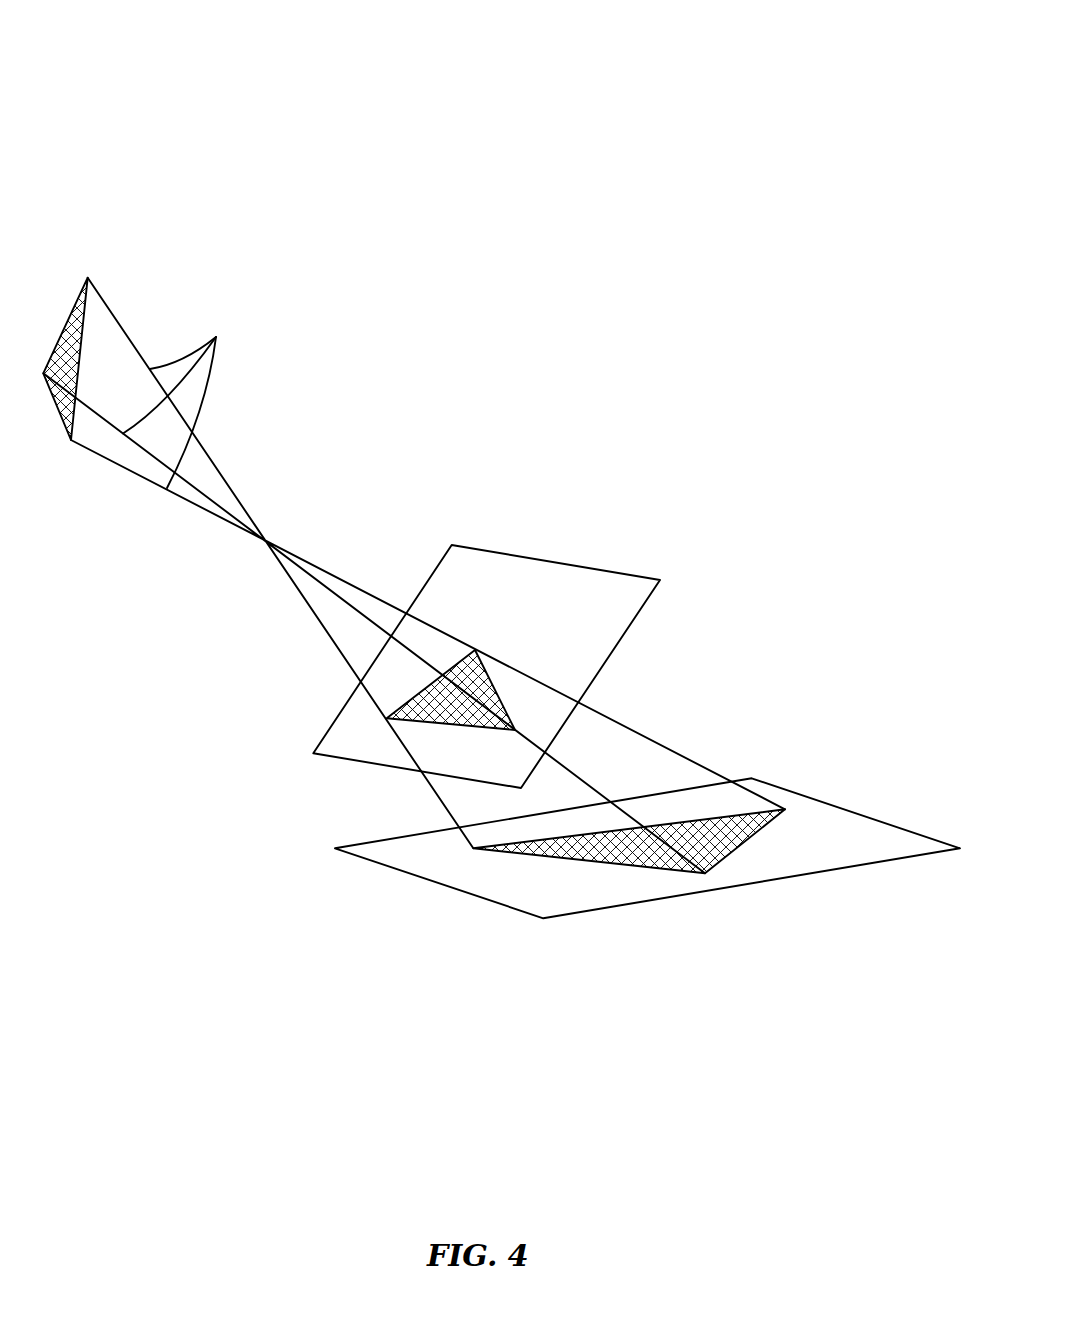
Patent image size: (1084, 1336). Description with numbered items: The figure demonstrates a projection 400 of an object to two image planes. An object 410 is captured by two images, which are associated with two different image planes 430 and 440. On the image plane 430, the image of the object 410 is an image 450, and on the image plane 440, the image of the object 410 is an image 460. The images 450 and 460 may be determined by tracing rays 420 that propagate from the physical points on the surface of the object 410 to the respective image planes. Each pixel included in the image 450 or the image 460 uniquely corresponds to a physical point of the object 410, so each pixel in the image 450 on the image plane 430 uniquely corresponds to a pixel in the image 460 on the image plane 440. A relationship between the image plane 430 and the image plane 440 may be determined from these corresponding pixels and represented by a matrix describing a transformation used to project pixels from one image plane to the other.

The projection 400 is at (778, 59).
The object 410 is at (85, 318).
The rays 420 is at (185, 398).
The image plane 430 is at (585, 567).
The image plane 440 is at (860, 815).
The image 450 is at (500, 697).
The image 460 is at (543, 857).